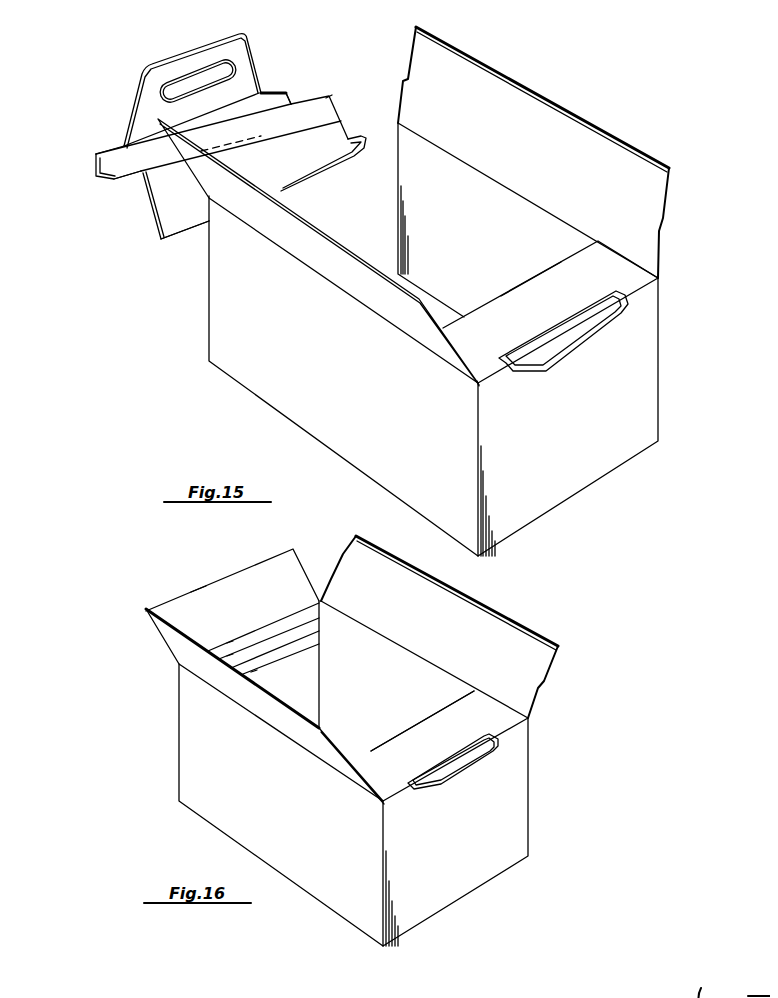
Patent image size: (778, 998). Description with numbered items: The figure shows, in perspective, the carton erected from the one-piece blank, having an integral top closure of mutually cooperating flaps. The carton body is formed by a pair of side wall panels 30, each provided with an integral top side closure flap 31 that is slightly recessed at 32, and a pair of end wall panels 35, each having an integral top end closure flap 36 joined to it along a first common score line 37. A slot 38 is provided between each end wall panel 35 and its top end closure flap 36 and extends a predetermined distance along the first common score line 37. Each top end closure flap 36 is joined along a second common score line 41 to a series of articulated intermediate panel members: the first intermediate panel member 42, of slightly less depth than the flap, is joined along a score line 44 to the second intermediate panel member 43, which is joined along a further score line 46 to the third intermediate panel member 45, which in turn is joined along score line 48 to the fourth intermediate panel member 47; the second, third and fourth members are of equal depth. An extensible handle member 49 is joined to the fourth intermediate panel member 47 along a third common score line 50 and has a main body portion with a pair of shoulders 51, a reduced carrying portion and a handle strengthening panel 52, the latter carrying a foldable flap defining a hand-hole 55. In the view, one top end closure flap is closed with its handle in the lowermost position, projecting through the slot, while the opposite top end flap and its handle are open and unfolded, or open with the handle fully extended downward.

In FIG. 15, the side wall panel 30 is at (338, 344).
In FIG. 16, the side wall panel 30 is at (272, 800).
In FIG. 15, the top side closure flap 31 is at (545, 108).
In FIG. 16, the top side closure flap 31 is at (463, 602).
In FIG. 15, the recess 32 is at (408, 54).
In FIG. 16, the recess 32 is at (341, 562).
In FIG. 15, the end wall panel 35 is at (349, 219).
In FIG. 16, the end wall panel 35 is at (445, 831).
In FIG. 15, the top end closure flap 36 is at (185, 229).
In FIG. 16, the top end closure flap 36 is at (408, 738).
In FIG. 15, the first common score line 37 is at (482, 384).
In FIG. 15, the slot 38 is at (348, 156).
In FIG. 16, the slot 38 is at (475, 742).
In FIG. 15, the second common score line 41 is at (165, 237).
In FIG. 16, the second common score line 41 is at (245, 566).
In FIG. 15, the first intermediate panel member 42 is at (340, 118).
In FIG. 16, the first intermediate panel member 42 is at (197, 592).
In FIG. 15, the second intermediate panel member 43 is at (329, 100).
In FIG. 16, the second intermediate panel member 43 is at (229, 641).
In FIG. 15, the score line 44 is at (275, 122).
In FIG. 16, the score line 44 is at (257, 626).
In FIG. 15, the third intermediate panel member 45 is at (130, 177).
In FIG. 16, the third intermediate panel member 45 is at (228, 655).
In FIG. 15, the further score line 46 is at (240, 133).
In FIG. 16, the further score line 46 is at (319, 618).
In FIG. 15, the fourth intermediate panel member 47 is at (291, 101).
In FIG. 16, the fourth intermediate panel member 47 is at (252, 668).
In FIG. 15, the score line 48 is at (123, 145).
In FIG. 16, the score line 48 is at (320, 632).
In FIG. 15, the extensible handle member 49 is at (287, 92).
In FIG. 15, the third common score line 50 is at (104, 176).
In FIG. 16, the third common score line 50 is at (292, 653).
In FIG. 15, the shoulder 51 is at (268, 90).
In FIG. 15, the handle strengthening panel 52 is at (252, 43).
In FIG. 16, the handle strengthening panel 52 is at (497, 746).
In FIG. 15, the hand-hole 55 is at (220, 71).